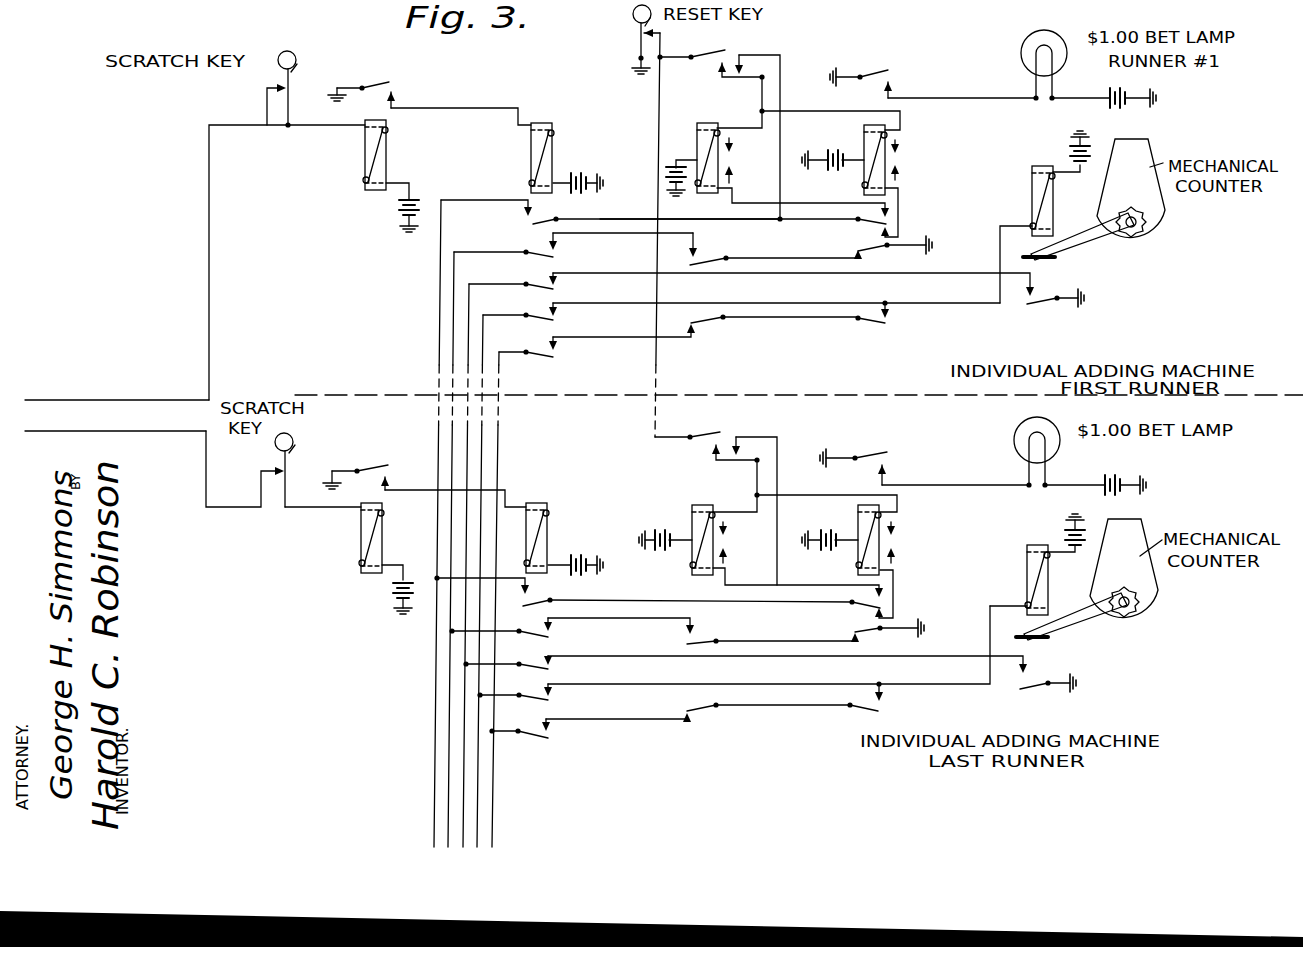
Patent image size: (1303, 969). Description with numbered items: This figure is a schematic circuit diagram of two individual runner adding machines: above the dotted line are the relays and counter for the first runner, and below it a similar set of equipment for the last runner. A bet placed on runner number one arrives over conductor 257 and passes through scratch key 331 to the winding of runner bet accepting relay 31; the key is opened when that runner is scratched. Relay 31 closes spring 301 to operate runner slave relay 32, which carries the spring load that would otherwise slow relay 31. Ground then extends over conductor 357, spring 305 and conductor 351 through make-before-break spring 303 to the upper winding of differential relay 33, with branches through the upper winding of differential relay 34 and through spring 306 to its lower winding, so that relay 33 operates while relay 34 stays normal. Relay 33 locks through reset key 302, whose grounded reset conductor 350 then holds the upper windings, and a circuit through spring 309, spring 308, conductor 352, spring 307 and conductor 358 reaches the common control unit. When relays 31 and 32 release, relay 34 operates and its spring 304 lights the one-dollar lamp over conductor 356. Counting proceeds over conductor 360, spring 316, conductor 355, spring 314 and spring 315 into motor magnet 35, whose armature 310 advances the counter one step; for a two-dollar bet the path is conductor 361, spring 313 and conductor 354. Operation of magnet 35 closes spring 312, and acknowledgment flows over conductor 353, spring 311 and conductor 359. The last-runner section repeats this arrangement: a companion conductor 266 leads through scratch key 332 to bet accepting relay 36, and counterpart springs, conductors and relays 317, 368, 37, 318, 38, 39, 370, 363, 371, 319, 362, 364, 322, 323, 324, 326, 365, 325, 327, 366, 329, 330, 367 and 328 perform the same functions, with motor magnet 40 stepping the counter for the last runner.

The conductor 257 is at (117, 389).
The conductor 266 is at (115, 421).
The scratch key 331 is at (291, 94).
The spring 301 is at (382, 82).
The runner bet accepting relay 31 is at (388, 160).
The runner slave relay 32 is at (556, 160).
The reset key 302 is at (636, 40).
The reset conductor 350 is at (656, 86).
The make before break spring 303 is at (758, 80).
The differential relay 33 is at (708, 136).
The differential relay 34 is at (866, 152).
The spring 306 is at (888, 224).
The spring 304 is at (886, 70).
The conductor 356 is at (963, 98).
The motor magnet 35 is at (1034, 200).
The armature 310 is at (1075, 260).
The spring 305 is at (535, 226).
The conductor 351 is at (722, 222).
The conductor 357 is at (439, 289).
The conductor 358 is at (508, 252).
The spring 307 is at (557, 257).
The conductor 352 is at (637, 235).
The spring 308 is at (710, 266).
The spring 309 is at (872, 244).
The conductor 359 is at (500, 284).
The spring 311 is at (558, 289).
The conductor 353 is at (910, 275).
The spring 312 is at (1040, 308).
The conductor 354 is at (780, 303).
The conductor 361 is at (498, 315).
The spring 313 is at (556, 320).
The spring 315 is at (878, 325).
The spring 314 is at (704, 322).
The conductor 355 is at (650, 337).
The conductor 360 is at (503, 356).
The spring 316 is at (565, 354).
The scratch key 332 is at (292, 477).
The bet accepting relay 36 is at (360, 532).
The switch contact 317 is at (387, 466).
The conductor 368 is at (506, 490).
The relay 37 is at (550, 545).
The switch contact 318 is at (720, 458).
The relay 38 is at (696, 528).
The relay 39 is at (862, 530).
The switch contact 370 is at (856, 606).
The conductor 363 is at (638, 601).
The switch contact 371 is at (553, 602).
The switch contact 319 is at (885, 455).
The conductor 362 is at (960, 485).
The motor magnet 40 is at (1030, 570).
The conductor 364 is at (628, 621).
The switch contact 322 is at (556, 637).
The switch contact 323 is at (700, 641).
The switch contact 324 is at (870, 632).
The switch contact 326 is at (556, 668).
The conductor 365 is at (652, 657).
The switch contact 325 is at (1028, 690).
The switch contact 327 is at (556, 698).
The conductor 366 is at (763, 684).
The switch contact 329 is at (706, 708).
The switch contact 330 is at (882, 711).
The conductor 367 is at (636, 722).
The switch contact 328 is at (540, 742).